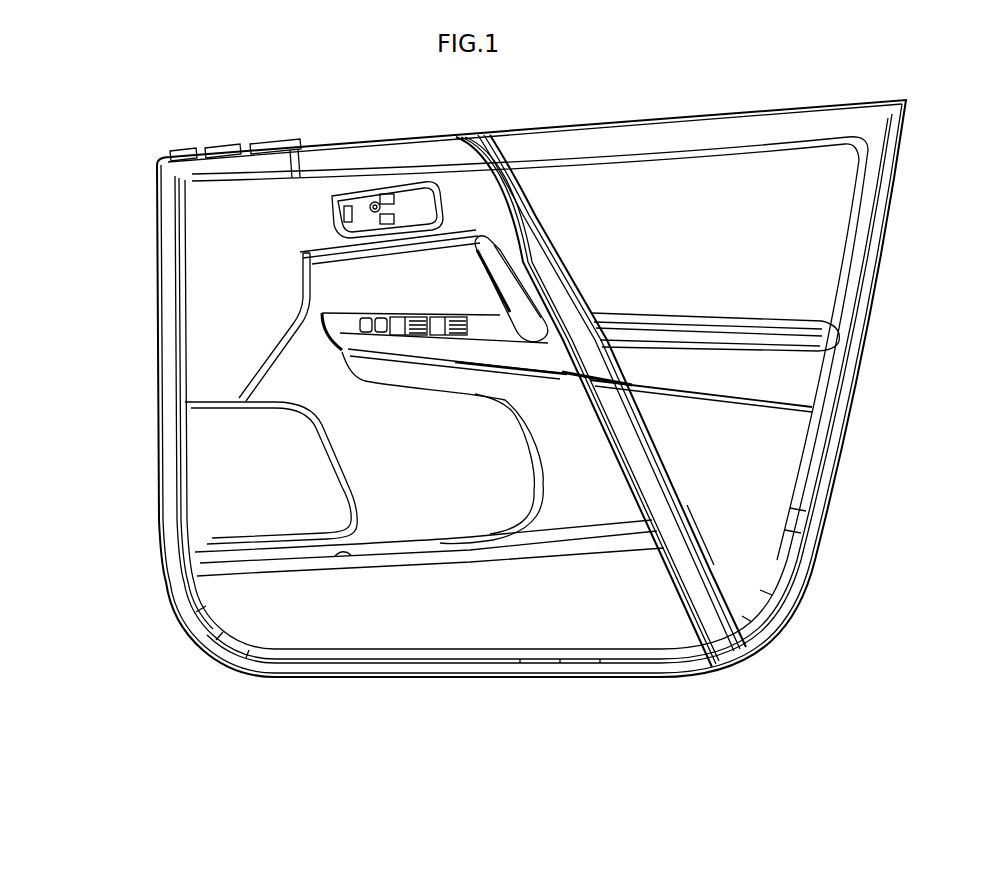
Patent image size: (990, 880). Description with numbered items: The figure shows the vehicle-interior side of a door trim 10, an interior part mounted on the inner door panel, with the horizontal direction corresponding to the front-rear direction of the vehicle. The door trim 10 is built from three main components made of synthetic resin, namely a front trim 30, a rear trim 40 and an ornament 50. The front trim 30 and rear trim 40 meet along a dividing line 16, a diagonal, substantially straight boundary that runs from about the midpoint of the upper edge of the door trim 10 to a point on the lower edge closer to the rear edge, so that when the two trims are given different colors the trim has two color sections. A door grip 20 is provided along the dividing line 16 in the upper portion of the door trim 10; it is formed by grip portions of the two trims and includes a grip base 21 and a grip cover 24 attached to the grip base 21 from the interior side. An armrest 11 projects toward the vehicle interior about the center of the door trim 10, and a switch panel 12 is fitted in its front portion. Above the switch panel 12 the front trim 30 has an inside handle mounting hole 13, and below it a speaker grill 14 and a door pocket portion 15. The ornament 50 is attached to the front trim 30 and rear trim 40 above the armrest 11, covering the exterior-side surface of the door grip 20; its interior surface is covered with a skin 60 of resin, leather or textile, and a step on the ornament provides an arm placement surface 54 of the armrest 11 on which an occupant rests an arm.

The door trim 10 is at (100, 163).
The armrest 11 is at (790, 372).
The switch panel 12 is at (383, 314).
The inside handle mounting hole 13 is at (360, 195).
The speaker grill 14 is at (213, 463).
The door pocket portion 15 is at (340, 557).
The dividing line 16 is at (690, 527).
The door grip 20 is at (601, 356).
The grip base 21 is at (570, 274).
The grip cover 24 is at (533, 262).
The front trim 30 is at (415, 689).
The rear trim 40 is at (840, 563).
The ornament 50 is at (591, 348).
The arm placement surface 54 is at (778, 321).
The skin 60 is at (778, 222).